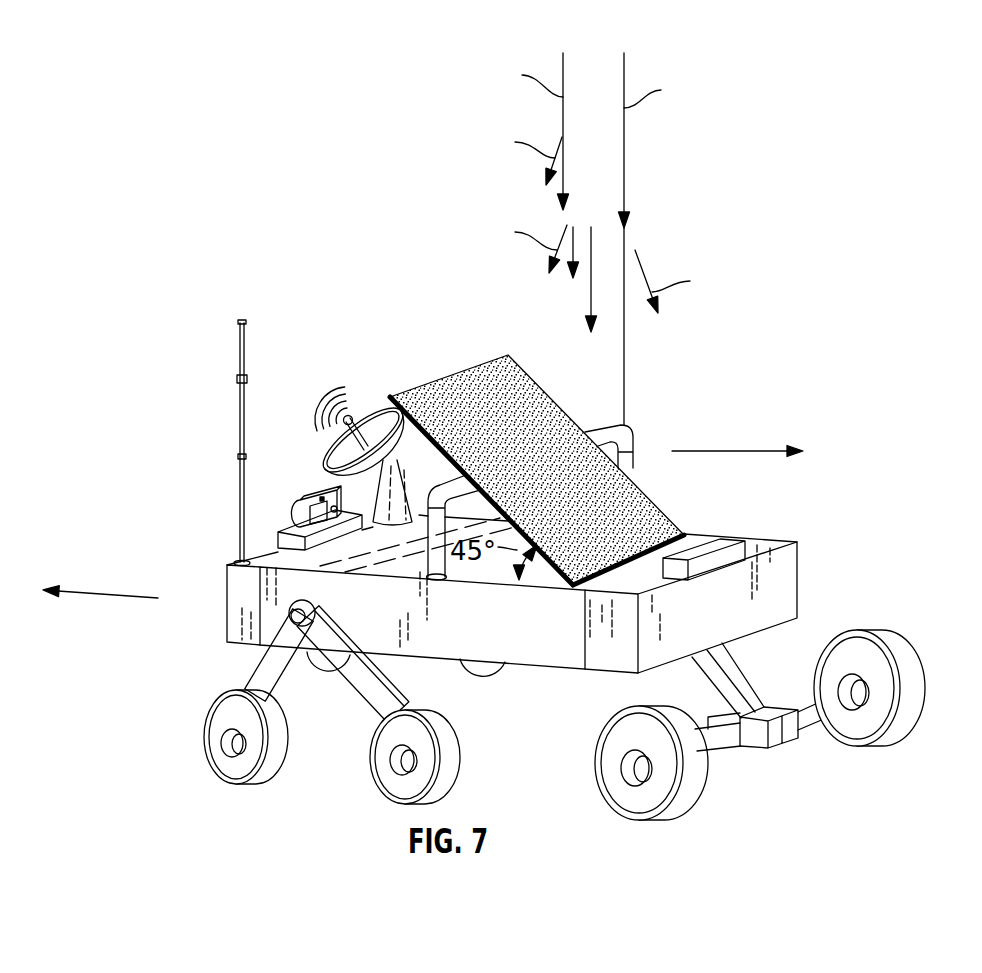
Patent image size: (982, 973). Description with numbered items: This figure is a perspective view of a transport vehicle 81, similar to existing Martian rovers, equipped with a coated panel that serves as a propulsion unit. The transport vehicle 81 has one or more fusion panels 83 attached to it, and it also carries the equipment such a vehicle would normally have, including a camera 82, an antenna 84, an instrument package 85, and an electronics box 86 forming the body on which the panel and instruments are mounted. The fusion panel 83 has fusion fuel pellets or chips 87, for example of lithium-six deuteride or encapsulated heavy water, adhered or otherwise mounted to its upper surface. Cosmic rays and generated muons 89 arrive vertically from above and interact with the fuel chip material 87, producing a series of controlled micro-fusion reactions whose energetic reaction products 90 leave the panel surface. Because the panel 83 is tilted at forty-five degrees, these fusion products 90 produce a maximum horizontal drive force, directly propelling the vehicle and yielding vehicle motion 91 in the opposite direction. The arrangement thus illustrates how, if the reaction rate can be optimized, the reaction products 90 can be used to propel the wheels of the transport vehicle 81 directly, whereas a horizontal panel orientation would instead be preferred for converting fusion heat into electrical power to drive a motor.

The transport vehicle 81 is at (532, 665).
The camera 82 is at (313, 497).
The fusion panel 83 is at (392, 405).
The antenna 84 is at (334, 450).
The instrument package 85 is at (718, 543).
The electronics box 86 is at (552, 650).
The fusion fuel pellets or chips 87 is at (502, 385).
The cosmic rays and generated muons 89 is at (642, 262).
The energetic reaction products 90 is at (738, 452).
The vehicle motion 91 is at (100, 592).